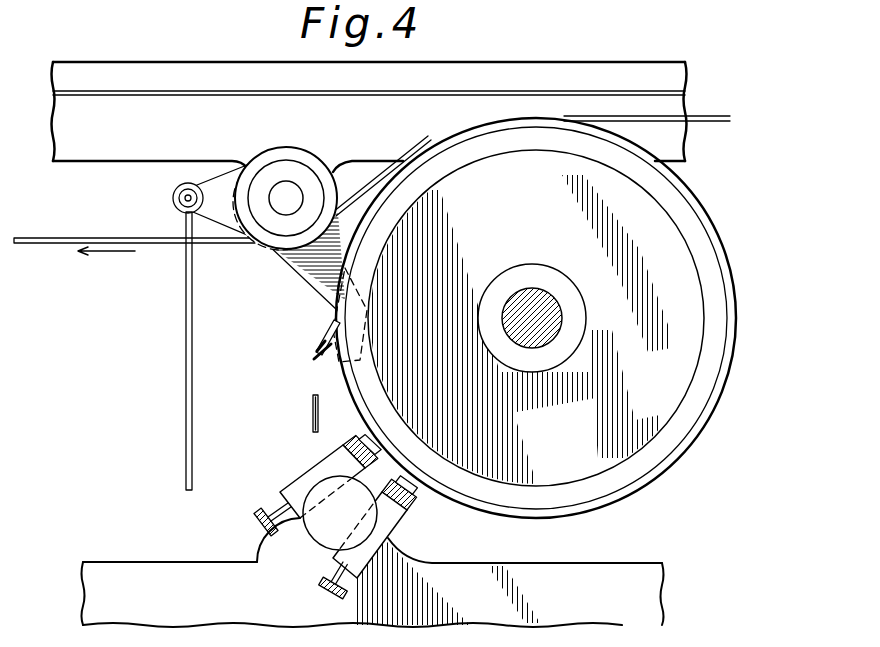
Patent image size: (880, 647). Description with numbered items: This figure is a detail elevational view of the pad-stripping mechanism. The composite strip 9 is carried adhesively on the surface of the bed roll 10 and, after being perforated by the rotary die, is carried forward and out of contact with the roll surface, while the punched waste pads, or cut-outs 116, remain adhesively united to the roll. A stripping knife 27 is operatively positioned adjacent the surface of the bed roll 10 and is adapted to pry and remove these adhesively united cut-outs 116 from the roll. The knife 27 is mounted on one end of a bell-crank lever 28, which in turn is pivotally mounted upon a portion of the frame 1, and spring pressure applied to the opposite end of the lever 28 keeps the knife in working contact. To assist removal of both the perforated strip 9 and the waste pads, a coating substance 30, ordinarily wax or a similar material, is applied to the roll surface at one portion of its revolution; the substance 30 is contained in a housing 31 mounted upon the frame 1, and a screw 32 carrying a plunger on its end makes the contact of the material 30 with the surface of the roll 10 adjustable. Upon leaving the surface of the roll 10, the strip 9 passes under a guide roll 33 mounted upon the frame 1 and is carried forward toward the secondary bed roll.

The frame 1 is at (90, 142).
The composite strip 9 is at (96, 236).
The bed roll 10 is at (648, 405).
The stripping knife 27 is at (335, 322).
The bell-crank lever 28 is at (211, 189).
The coating substance 30 is at (372, 443).
The housing 31 is at (300, 482).
The screw 32 is at (272, 508).
The guide roll 33 is at (300, 160).
The cut-outs 116 is at (322, 348).